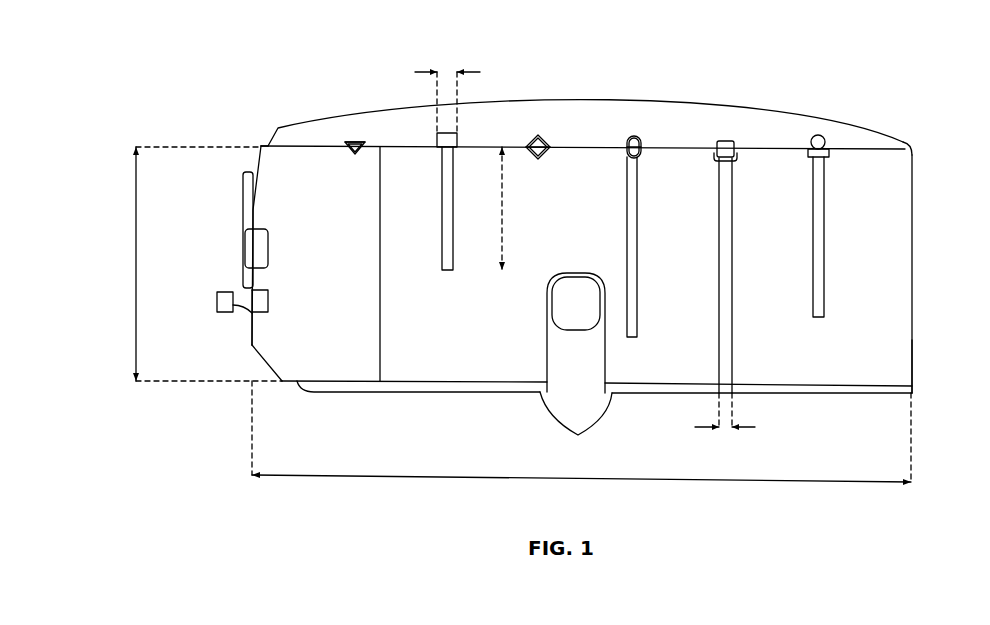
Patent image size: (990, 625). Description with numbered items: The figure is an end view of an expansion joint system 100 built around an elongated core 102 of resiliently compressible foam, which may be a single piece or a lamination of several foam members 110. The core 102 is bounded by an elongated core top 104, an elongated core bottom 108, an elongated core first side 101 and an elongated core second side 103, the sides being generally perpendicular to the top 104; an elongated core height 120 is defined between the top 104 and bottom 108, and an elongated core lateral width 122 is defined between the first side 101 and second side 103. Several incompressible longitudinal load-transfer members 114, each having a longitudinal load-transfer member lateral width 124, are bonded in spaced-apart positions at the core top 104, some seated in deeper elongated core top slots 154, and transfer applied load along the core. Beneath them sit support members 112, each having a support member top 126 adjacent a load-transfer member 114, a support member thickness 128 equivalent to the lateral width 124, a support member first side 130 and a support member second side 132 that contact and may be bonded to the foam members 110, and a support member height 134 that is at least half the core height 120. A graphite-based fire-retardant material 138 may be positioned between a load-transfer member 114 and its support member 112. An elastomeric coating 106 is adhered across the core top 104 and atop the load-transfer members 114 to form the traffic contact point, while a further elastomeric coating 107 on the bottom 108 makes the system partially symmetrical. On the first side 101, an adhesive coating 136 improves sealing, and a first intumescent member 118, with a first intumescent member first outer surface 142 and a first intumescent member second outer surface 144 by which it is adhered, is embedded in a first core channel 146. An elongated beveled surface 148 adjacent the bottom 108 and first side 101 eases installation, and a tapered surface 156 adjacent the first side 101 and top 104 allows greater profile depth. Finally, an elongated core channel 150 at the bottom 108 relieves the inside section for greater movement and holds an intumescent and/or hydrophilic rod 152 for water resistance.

The expansion joint system 100 is at (213, 47).
The elongated core first side 101 is at (251, 321).
The elongated core 102 is at (912, 191).
The elongated core second side 103 is at (912, 362).
The elongated core top 104 is at (875, 132).
The elastomeric coating 106 is at (597, 103).
The elastomeric coating 107 is at (576, 426).
The elongated core bottom 108 is at (884, 395).
The foam members 110 is at (337, 385).
The support member 112 is at (453, 191).
The longitudinal load-transfer member 114 is at (356, 142).
The first intumescent member 118 is at (248, 241).
The elongated core height 120 is at (140, 263).
The elongated core lateral width 122 is at (580, 481).
The longitudinal load-transfer member lateral width 124 is at (459, 72).
The support member top 126 is at (735, 161).
The support member thickness 128 is at (709, 430).
The support member first side 130 is at (718, 331).
The support member second side 132 is at (734, 326).
The support member height 134 is at (505, 227).
The adhesive coating 136 is at (243, 191).
The graphite-based fire-retardant material 138 is at (829, 157).
The first intumescent member first outer surface 142 is at (217, 301).
The first intumescent member second outer surface 144 is at (262, 311).
The first core channel 146 is at (270, 300).
The elongated beveled surface 148 is at (259, 355).
The elongated core channel 150 is at (558, 350).
The intumescent and/or hydrophilic rod 152 is at (571, 284).
The elongated core top slot 154 is at (343, 152).
The tapered surface 156 is at (256, 150).